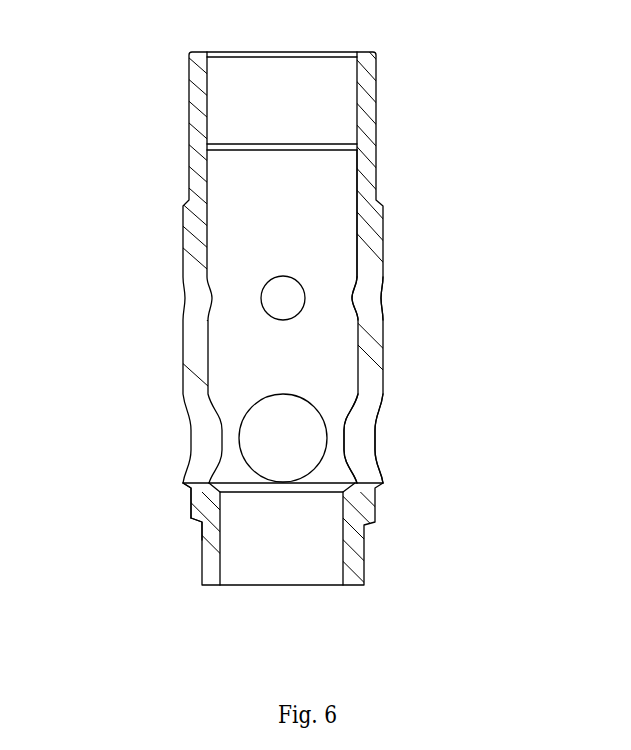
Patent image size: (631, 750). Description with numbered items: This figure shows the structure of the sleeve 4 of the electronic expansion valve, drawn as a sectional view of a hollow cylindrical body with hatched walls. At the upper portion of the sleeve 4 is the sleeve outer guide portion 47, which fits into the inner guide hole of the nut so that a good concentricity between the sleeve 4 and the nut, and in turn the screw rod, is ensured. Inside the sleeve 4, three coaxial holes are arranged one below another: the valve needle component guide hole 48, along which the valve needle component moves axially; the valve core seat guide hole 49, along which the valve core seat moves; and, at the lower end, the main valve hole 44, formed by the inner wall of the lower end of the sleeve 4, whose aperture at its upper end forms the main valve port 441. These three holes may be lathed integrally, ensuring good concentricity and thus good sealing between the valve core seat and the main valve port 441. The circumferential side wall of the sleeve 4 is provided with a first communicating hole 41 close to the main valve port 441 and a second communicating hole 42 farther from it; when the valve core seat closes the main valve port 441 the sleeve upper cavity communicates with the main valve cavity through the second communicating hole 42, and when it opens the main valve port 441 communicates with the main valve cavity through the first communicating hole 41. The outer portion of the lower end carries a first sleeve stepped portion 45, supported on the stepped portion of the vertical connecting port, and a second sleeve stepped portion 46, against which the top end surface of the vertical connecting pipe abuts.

The sleeve 4 is at (197, 120).
The sleeve outer guide portion 47 is at (378, 157).
The valve needle component guide hole 48 is at (347, 232).
The second communicating hole 42 is at (368, 297).
The valve core seat guide hole 49 is at (320, 362).
The first communicating hole 41 is at (358, 440).
The main valve port 441 is at (330, 490).
The main valve hole 44 is at (330, 552).
The first sleeve stepped portion 45 is at (190, 488).
The second sleeve stepped portion 46 is at (196, 520).